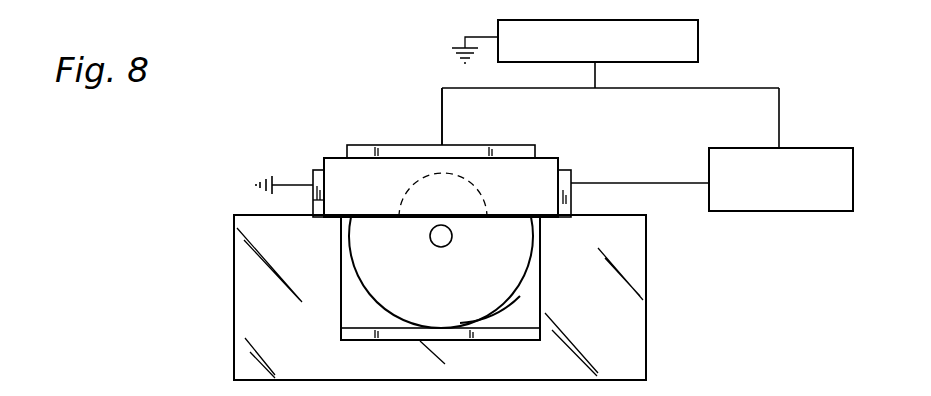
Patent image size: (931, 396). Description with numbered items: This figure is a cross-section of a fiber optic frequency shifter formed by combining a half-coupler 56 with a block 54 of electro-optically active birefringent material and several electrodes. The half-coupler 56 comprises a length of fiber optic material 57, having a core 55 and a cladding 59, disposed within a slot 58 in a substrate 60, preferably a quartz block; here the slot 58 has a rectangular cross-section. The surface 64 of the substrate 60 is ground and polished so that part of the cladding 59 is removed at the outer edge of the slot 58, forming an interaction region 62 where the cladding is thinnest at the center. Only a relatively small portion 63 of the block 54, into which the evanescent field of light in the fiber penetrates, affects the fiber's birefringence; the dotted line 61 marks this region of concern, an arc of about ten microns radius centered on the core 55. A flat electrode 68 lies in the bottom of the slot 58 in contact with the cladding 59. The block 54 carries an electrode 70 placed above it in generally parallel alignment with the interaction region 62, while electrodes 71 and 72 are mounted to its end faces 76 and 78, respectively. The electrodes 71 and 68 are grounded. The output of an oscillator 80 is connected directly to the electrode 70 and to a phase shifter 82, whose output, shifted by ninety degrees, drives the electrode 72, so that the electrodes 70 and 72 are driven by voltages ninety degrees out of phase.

The oscillator 80 is at (698, 42).
The phase shifter 82 is at (826, 148).
The electrode 70 is at (470, 145).
The block 54 is at (500, 158).
The dotted line 61 is at (418, 183).
The interaction region 62 is at (436, 206).
The portion 63 is at (462, 197).
The end face 76 is at (313, 172).
The surface 64 is at (250, 214).
The electrode 72 is at (565, 170).
The end face 78 is at (567, 200).
The electrode 71 is at (311, 205).
The substrate 60 is at (646, 328).
The half-coupler 56 is at (662, 272).
The electrode 68 is at (488, 335).
The slot 58 is at (343, 286).
The cladding 59 is at (520, 296).
The core 55 is at (452, 240).
The fiber optic material 57 is at (355, 312).